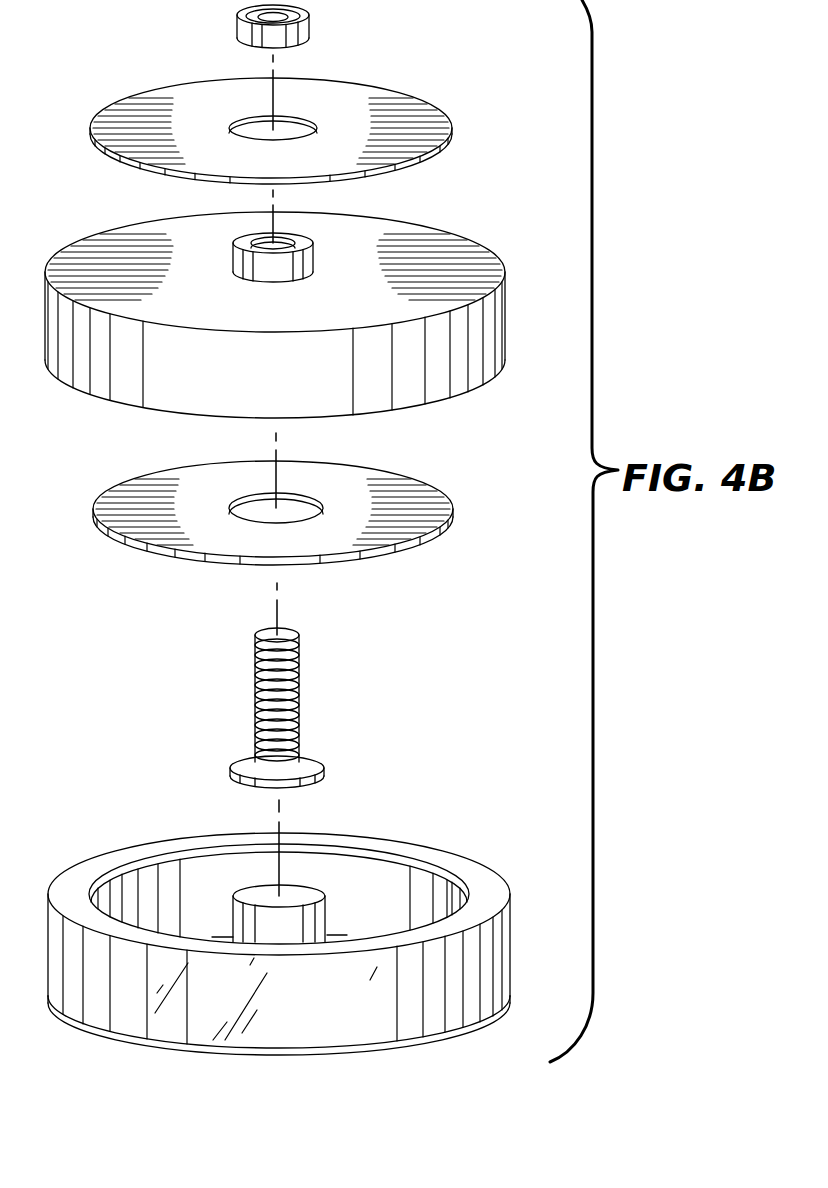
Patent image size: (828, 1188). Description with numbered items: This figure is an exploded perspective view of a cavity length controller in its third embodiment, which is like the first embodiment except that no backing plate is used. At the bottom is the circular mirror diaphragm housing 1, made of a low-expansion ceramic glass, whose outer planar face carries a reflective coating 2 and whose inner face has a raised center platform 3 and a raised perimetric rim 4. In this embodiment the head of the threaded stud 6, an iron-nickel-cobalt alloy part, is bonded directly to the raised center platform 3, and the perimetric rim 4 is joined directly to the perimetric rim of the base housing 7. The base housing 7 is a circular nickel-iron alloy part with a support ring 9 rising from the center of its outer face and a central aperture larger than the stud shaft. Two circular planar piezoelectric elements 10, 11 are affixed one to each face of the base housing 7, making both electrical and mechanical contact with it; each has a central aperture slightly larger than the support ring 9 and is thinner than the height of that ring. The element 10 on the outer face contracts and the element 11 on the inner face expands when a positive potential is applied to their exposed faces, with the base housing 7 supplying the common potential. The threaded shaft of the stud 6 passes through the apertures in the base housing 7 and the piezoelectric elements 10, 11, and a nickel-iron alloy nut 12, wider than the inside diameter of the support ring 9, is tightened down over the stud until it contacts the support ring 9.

The mirror diaphragm housing 1 is at (305, 941).
The reflective coating 2 is at (115, 1037).
The raised center platform 3 is at (325, 910).
The raised perimetric rim 4 is at (427, 842).
The threaded stud 6 is at (302, 713).
The base housing 7 is at (300, 298).
The support ring 9 is at (313, 257).
The piezoelectric element 10 is at (427, 104).
The piezoelectric element 11 is at (427, 483).
The nut 12 is at (310, 28).